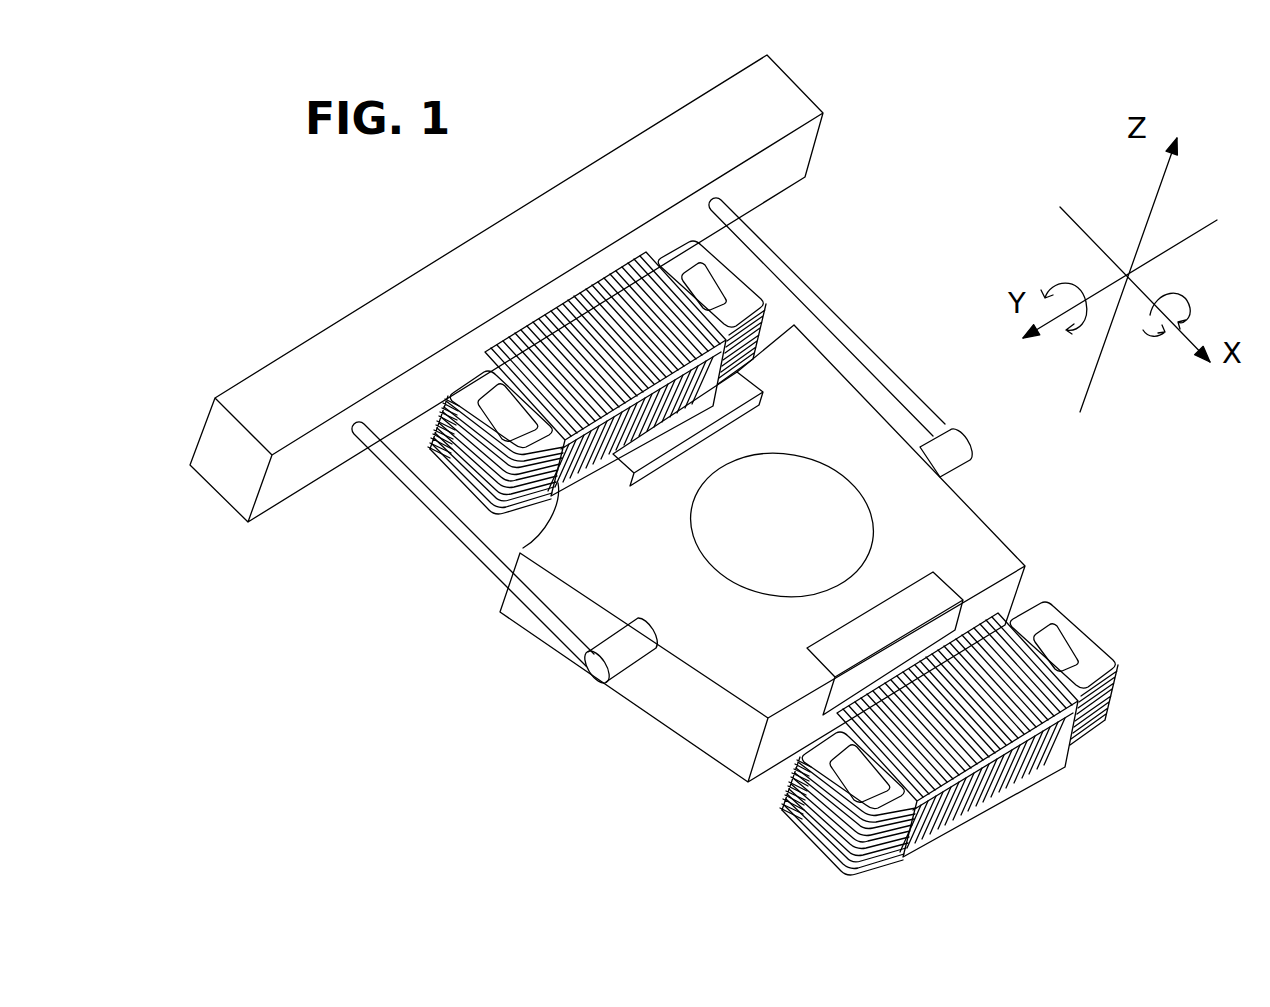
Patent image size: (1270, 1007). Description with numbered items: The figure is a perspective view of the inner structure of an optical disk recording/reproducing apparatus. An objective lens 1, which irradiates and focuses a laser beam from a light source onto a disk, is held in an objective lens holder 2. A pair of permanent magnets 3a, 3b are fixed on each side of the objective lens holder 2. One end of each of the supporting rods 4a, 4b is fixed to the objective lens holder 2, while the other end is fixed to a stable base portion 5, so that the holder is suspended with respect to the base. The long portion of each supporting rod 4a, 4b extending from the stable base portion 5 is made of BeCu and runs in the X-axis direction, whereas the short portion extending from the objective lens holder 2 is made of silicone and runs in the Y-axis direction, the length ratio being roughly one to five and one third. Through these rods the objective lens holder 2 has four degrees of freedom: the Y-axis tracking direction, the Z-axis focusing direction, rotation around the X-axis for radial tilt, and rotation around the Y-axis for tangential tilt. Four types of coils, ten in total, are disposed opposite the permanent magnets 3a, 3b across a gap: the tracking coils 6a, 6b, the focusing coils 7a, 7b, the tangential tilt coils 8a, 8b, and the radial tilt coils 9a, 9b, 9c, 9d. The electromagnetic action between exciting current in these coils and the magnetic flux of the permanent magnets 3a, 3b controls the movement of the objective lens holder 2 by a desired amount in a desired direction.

The objective lens 1 is at (853, 527).
The objective lens holder 2 is at (682, 712).
The permanent magnet 3a is at (735, 399).
The permanent magnet 3b is at (825, 652).
The supporting rod 4a is at (530, 630).
The supporting rod 4b is at (890, 350).
The stable base portion 5 is at (476, 247).
The tracking coil 6a is at (906, 860).
The tracking coil 6b is at (523, 548).
The focusing coil 7a is at (1047, 602).
The focusing coil 7b is at (695, 238).
The tangential tilt coil 8a is at (1074, 630).
The tangential tilt coil 8b is at (748, 255).
The radial tilt coil 9a is at (1094, 666).
The radial tilt coil 9b is at (746, 303).
The radial tilt coil 9c is at (403, 482).
The radial tilt coil 9d is at (792, 823).